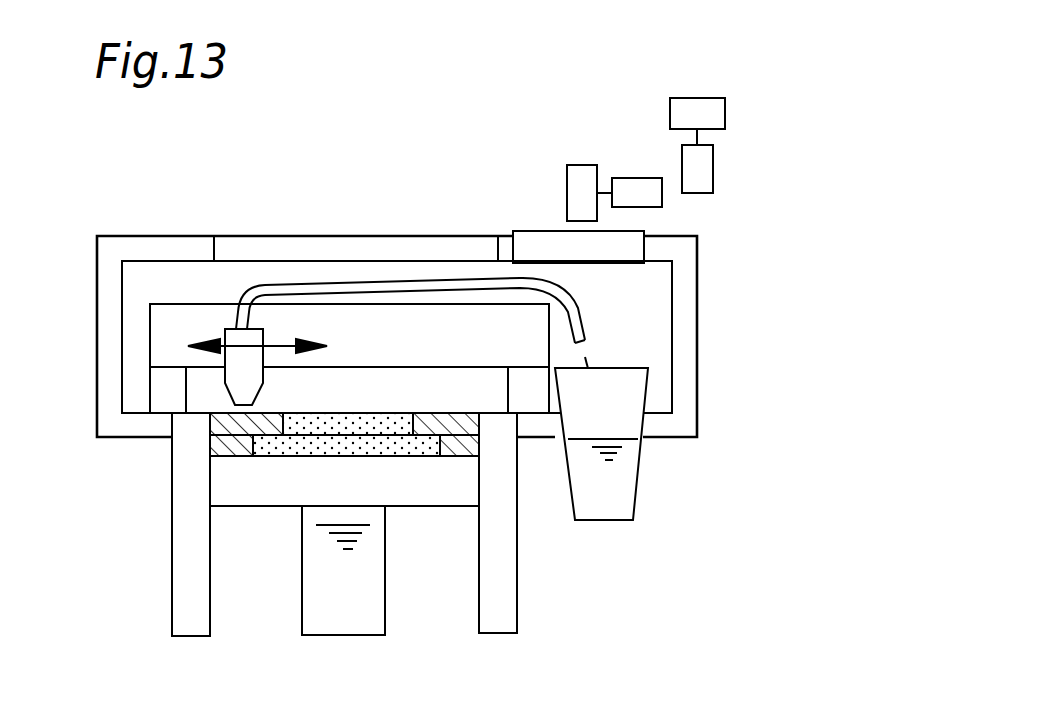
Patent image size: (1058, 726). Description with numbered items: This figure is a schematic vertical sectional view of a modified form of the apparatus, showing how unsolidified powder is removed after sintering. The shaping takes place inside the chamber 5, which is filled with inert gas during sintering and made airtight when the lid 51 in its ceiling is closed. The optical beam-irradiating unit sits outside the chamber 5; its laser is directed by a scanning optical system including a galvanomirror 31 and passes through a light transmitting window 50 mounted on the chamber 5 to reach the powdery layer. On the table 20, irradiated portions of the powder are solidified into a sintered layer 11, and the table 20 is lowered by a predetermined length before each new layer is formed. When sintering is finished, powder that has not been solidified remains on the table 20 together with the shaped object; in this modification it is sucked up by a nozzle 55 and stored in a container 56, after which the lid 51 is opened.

The chamber 5 is at (688, 315).
The sintered layer 11 is at (305, 423).
The table 20 is at (452, 479).
The galvanomirror 31 is at (697, 115).
The light transmitting window 50 is at (630, 250).
The lid 51 is at (280, 238).
The nozzle 55 is at (227, 330).
The container 56 is at (625, 480).